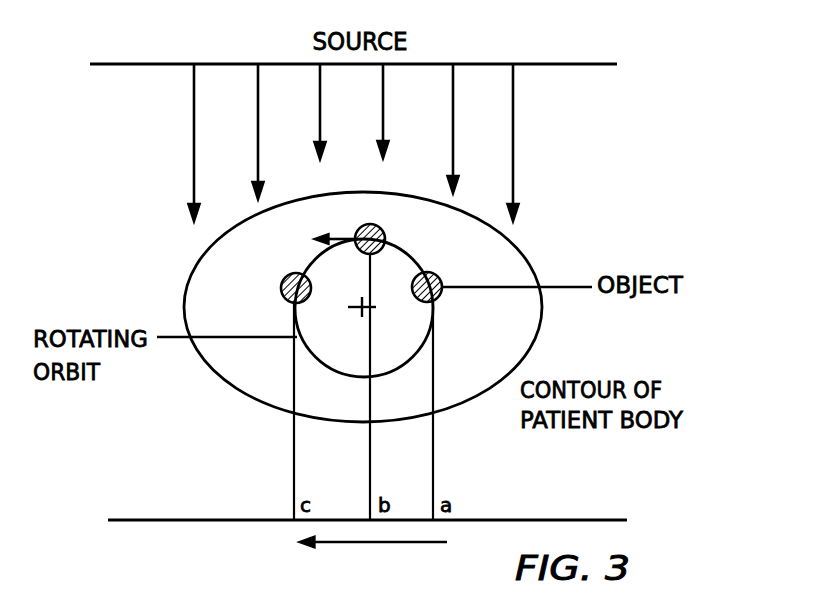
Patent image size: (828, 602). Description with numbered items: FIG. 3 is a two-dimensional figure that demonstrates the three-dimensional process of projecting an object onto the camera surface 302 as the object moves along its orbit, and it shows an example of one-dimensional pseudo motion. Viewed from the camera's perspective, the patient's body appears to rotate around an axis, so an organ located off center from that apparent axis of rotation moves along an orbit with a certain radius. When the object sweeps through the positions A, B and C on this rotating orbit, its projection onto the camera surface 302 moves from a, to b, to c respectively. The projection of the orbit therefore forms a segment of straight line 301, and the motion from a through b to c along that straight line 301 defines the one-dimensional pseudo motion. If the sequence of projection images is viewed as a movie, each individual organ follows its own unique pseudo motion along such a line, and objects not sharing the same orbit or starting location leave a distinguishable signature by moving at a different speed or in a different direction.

The straight line 301 is at (373, 545).
The camera surface 302 is at (627, 520).
The object position A is at (436, 280).
The object position B is at (381, 232).
The object position C is at (288, 279).